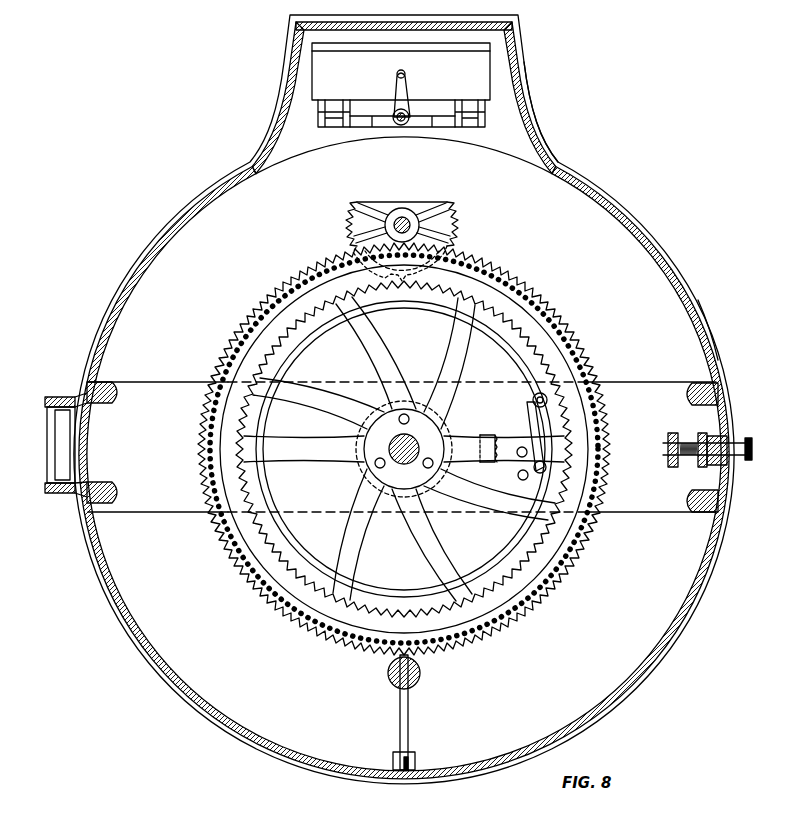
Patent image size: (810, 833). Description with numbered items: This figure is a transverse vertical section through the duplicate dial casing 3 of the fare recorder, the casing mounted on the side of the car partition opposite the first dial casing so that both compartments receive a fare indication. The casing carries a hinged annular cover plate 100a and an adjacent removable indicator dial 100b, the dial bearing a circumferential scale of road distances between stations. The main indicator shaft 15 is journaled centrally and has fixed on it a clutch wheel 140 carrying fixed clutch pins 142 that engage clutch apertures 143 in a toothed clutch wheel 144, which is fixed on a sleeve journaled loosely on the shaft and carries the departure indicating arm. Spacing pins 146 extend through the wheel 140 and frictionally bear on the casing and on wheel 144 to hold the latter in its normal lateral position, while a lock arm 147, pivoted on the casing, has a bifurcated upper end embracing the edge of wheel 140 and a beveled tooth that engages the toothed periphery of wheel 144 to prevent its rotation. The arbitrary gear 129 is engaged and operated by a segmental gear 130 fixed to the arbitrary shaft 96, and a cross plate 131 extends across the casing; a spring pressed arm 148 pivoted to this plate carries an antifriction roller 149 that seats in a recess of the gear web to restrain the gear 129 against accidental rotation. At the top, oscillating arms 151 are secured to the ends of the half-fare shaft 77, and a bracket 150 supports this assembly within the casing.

The duplicate dial casing 3 is at (495, 757).
The main indicator shaft 15 is at (390, 445).
The half-fare shaft 77 is at (397, 123).
The arbitrary shaft 96 is at (403, 219).
The hinged annular cover plate 100a is at (692, 304).
The indicator dial 100b is at (538, 156).
The arbitrary gear 129 is at (536, 352).
The segmental gear 130 is at (456, 210).
The cross plate 131 is at (638, 388).
The clutch wheel 140 is at (582, 337).
The clutch pins 142 is at (402, 251).
The clutch apertures 143 is at (368, 264).
The toothed clutch wheel 144 is at (456, 233).
The spacing pins 146 is at (429, 457).
The lock arm 147 is at (407, 725).
The spring pressed arm 148 is at (539, 429).
The antifriction roller 149 is at (533, 398).
The bracket plate 150 is at (488, 97).
The oscillating arms 151 is at (406, 92).